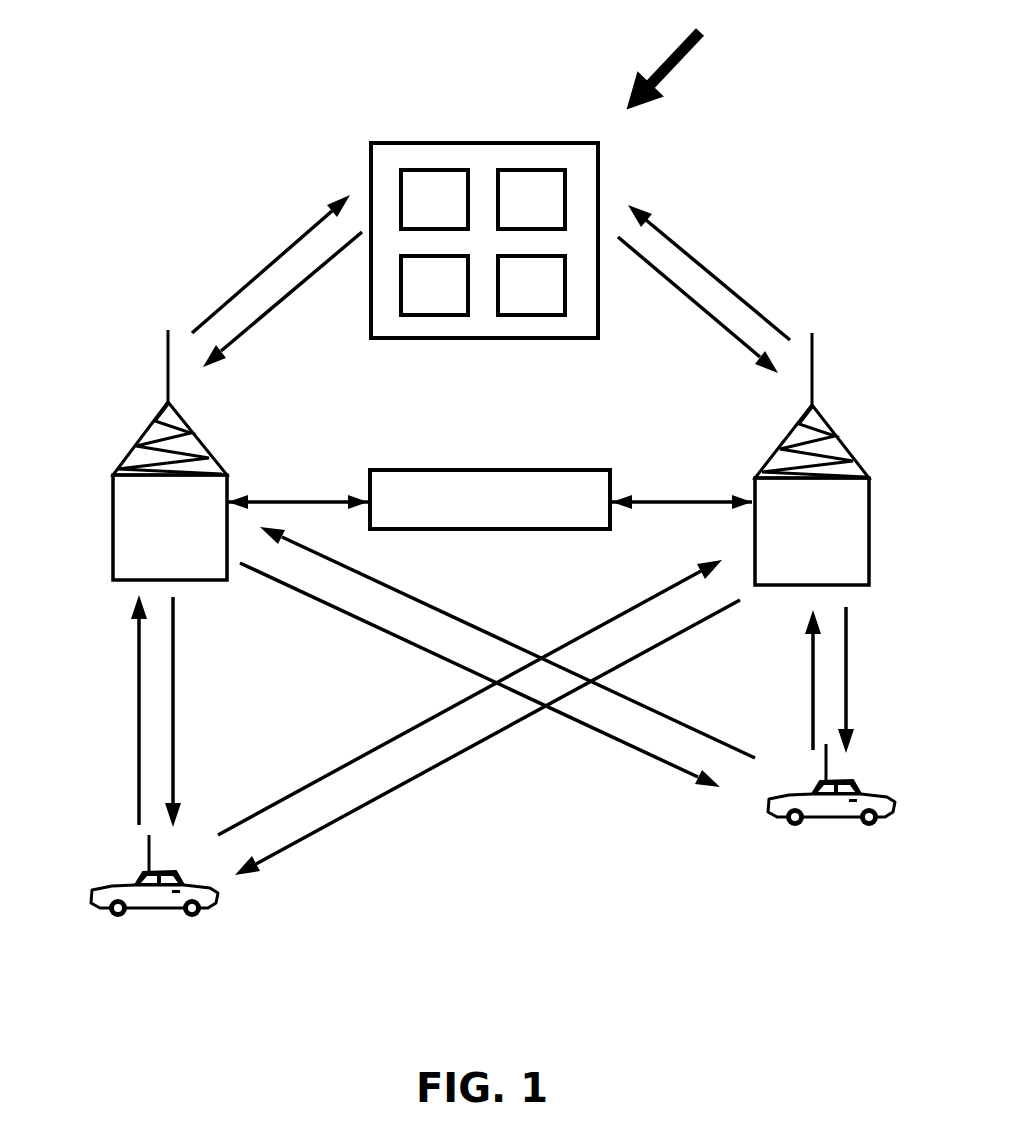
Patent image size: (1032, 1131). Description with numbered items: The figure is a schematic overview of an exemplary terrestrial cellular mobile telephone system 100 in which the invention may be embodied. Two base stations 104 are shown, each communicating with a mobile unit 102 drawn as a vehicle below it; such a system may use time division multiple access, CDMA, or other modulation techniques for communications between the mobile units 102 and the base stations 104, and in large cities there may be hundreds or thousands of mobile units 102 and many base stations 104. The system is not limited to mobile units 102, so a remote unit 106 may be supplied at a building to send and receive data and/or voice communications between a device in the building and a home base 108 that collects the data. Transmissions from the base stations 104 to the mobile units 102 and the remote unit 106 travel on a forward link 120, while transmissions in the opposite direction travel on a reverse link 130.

The terrestrial cellular mobile telephone system 100 is at (693, 54).
The mobile unit 102 is at (165, 912).
The base station 104 is at (148, 437).
The remote unit 106 is at (407, 142).
The home base 108 is at (490, 499).
The forward link 120 is at (245, 285).
The reverse link 130 is at (250, 330).